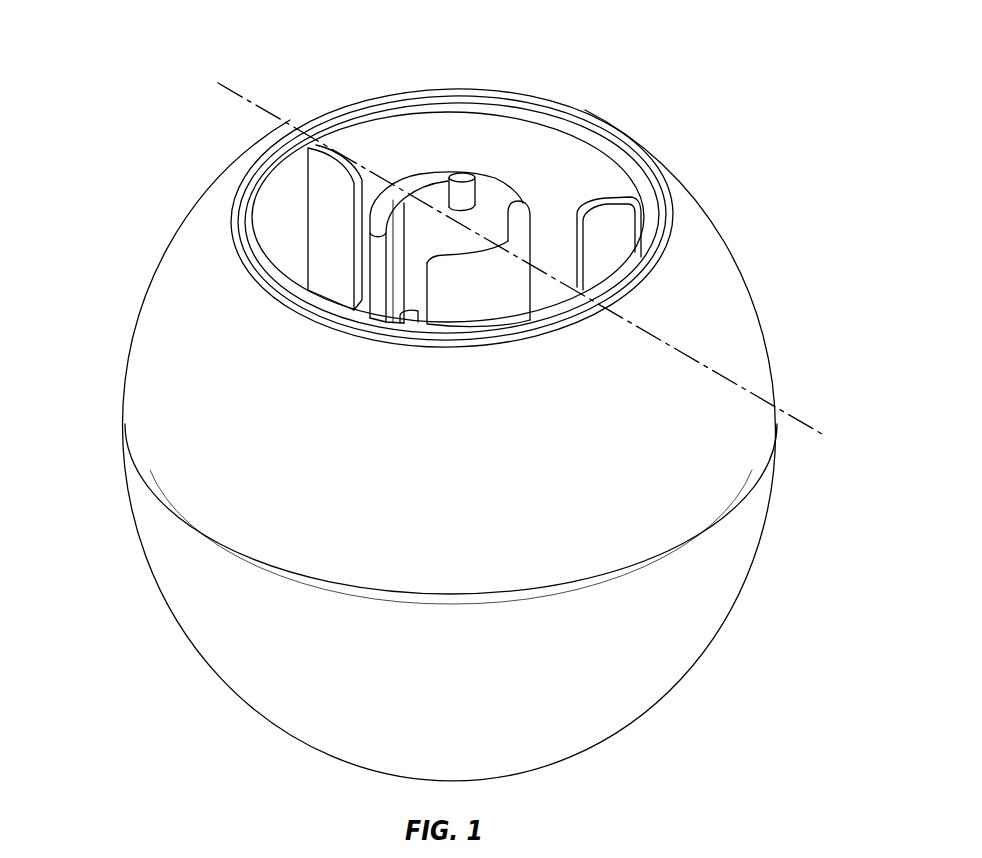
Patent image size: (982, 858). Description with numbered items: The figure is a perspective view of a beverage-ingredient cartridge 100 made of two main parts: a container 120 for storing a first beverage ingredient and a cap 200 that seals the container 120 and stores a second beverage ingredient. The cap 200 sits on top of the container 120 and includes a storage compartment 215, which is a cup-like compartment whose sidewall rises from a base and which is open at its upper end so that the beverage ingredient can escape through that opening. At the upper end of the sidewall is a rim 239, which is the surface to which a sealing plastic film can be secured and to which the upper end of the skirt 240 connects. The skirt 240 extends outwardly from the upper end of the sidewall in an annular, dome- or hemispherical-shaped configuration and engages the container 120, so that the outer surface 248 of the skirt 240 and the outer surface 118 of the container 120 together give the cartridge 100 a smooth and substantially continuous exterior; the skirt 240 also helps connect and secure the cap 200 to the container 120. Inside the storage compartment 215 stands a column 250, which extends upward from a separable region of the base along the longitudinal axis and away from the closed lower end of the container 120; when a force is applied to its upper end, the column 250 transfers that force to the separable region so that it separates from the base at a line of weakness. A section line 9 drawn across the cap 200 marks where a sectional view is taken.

The beverage-ingredient cartridge 100 is at (348, 73).
The cap 200 is at (705, 258).
The container 120 is at (722, 590).
The outer surface of skirt 248 is at (478, 449).
The outer surface of container 118 is at (523, 699).
The skirt 240 is at (680, 194).
The rim 239 is at (401, 101).
The storage compartment 215 is at (574, 158).
The column 250 is at (449, 200).
The section line 9- 9 is at (228, 132).